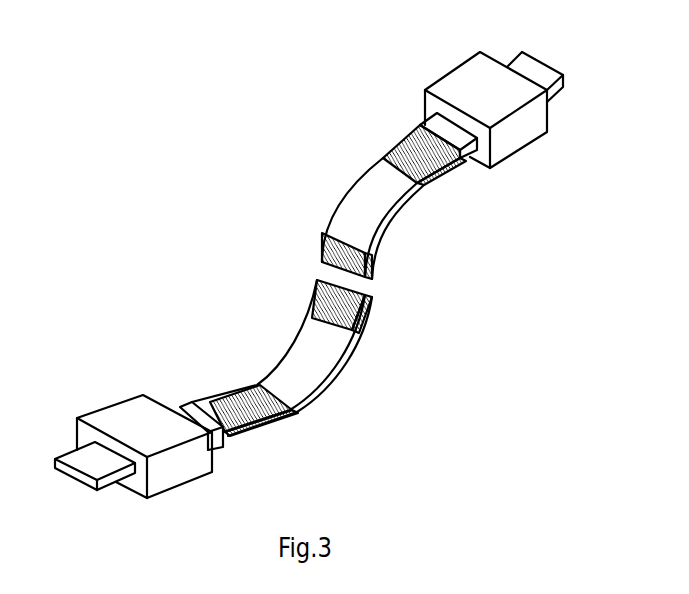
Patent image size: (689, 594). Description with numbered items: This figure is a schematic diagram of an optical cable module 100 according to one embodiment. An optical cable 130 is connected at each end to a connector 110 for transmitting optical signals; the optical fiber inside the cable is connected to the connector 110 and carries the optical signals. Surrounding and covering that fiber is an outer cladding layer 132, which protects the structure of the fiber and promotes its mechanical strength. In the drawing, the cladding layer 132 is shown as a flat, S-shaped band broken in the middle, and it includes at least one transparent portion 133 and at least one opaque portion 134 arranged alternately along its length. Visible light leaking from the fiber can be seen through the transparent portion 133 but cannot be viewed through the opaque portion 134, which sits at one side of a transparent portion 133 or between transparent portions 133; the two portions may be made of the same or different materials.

The cable assembly 100 is at (127, 38).
The connector 110 is at (515, 130).
The optical cable 130 is at (297, 193).
The outer cladding layer 132 is at (453, 336).
The transparent portion 133 is at (347, 310).
The opaque portion 134 is at (313, 367).